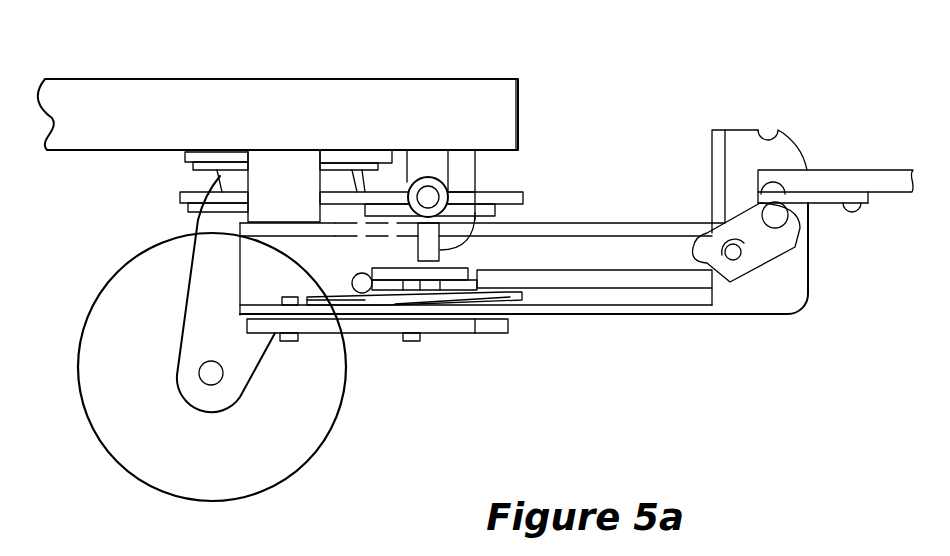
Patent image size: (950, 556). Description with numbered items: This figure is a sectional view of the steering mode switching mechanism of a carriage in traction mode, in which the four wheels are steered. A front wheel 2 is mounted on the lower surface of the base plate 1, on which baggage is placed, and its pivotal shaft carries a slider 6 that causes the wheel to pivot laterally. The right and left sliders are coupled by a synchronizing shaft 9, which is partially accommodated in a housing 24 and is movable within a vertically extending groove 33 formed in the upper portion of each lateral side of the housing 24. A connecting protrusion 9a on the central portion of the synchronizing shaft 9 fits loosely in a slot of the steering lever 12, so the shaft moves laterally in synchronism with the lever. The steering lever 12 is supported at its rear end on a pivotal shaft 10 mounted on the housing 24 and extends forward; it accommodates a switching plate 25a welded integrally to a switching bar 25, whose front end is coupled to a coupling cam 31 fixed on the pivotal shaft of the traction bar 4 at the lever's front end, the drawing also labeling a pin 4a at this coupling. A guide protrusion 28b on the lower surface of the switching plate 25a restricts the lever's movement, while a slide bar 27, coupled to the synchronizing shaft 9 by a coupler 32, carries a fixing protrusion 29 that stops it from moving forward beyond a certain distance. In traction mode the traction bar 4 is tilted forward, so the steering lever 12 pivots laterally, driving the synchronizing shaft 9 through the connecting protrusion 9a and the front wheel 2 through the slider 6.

The base plate 1 is at (172, 98).
The front wheel 2 is at (285, 463).
The traction bar 4 is at (883, 178).
The pivot pin 4a is at (779, 222).
The slider 6 is at (510, 193).
The synchronizing shaft 9 is at (424, 178).
The connecting protrusion 9a is at (477, 217).
The pivotal shaft 10 is at (289, 345).
The steering lever 12 is at (654, 228).
The housing 24 is at (465, 325).
The switching bar 25 is at (660, 278).
The switching plate 25a is at (512, 298).
The slide bar 27 is at (362, 293).
The guide protrusion 28b is at (412, 343).
The fixing protrusion 29 is at (468, 278).
The coupling cam 31 is at (767, 245).
The coupler 32 is at (403, 205).
The groove 33 is at (442, 150).